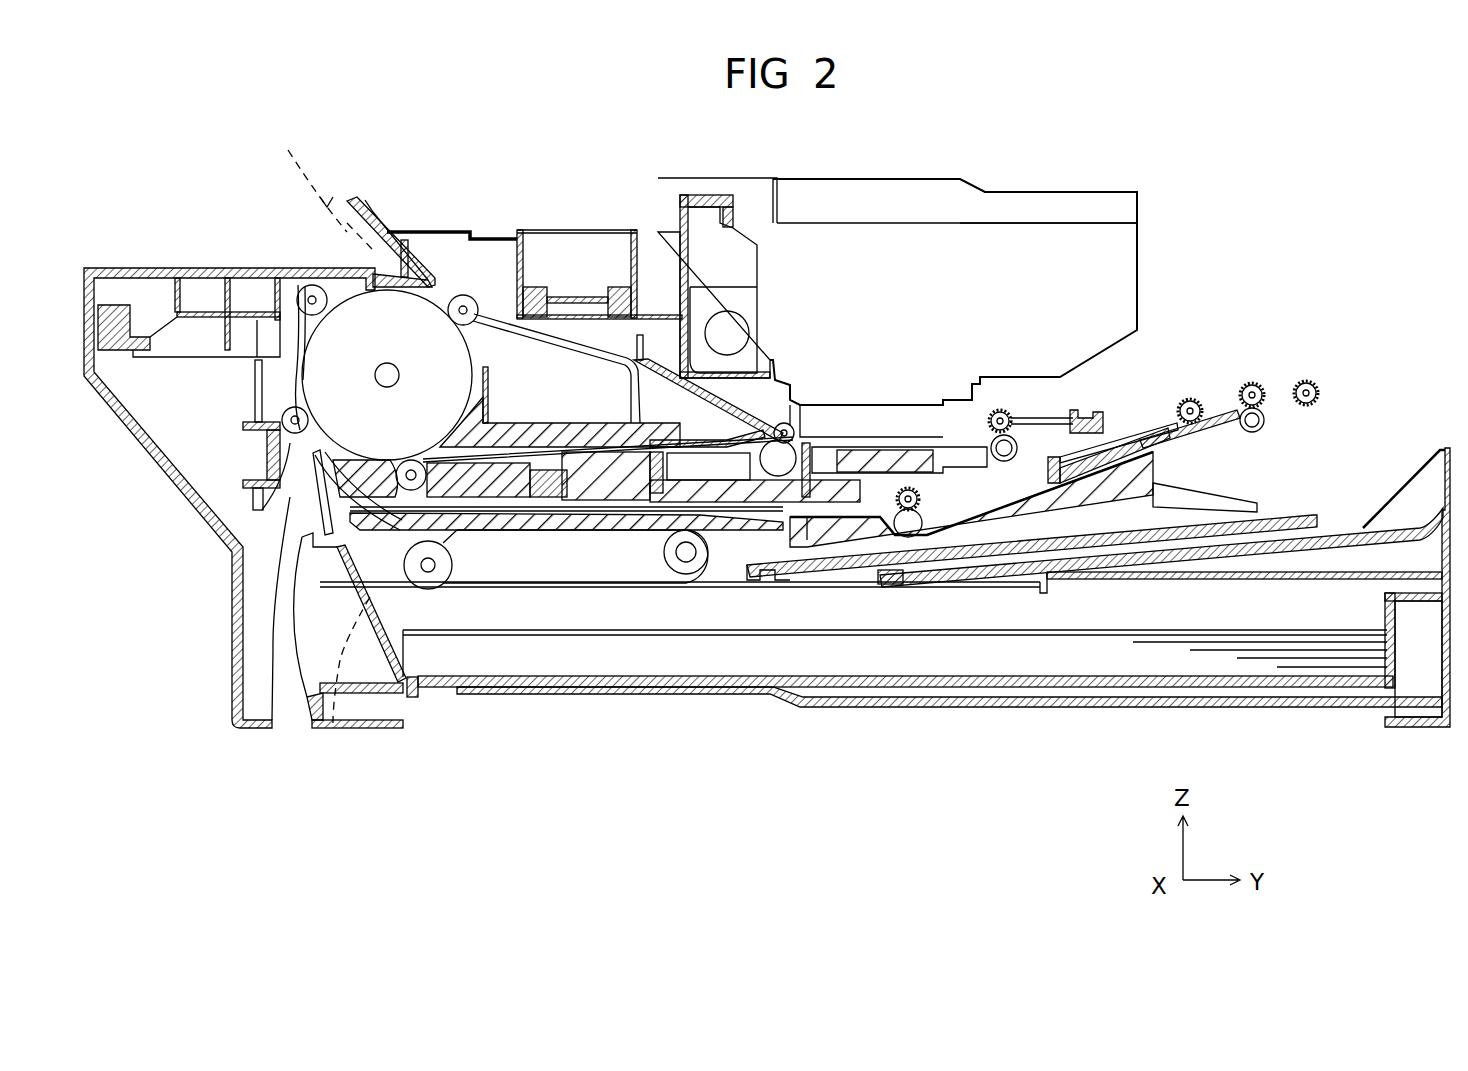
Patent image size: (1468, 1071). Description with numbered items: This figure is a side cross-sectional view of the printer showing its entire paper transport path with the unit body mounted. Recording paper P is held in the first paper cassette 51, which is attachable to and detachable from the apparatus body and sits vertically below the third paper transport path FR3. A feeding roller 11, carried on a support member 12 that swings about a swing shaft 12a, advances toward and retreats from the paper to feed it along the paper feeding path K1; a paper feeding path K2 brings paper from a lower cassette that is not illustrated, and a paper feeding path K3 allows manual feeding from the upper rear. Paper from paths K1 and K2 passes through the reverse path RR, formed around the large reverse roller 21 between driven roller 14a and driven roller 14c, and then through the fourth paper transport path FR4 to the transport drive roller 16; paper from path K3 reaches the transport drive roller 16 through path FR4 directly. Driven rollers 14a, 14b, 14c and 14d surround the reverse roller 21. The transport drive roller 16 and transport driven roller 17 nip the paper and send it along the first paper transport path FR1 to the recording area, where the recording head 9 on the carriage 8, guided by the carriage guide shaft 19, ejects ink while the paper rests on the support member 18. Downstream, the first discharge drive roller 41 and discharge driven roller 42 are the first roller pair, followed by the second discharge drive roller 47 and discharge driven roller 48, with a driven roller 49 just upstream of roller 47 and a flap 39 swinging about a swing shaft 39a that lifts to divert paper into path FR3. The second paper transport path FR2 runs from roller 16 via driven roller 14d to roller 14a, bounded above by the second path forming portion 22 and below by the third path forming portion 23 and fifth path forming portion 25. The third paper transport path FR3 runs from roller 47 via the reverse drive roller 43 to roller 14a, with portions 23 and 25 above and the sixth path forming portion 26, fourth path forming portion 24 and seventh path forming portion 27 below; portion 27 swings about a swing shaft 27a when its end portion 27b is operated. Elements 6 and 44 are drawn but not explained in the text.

The sheet discharge guide 6 is at (1350, 520).
The carriage 8 is at (913, 222).
The recording head 9 is at (912, 392).
The feeding roller 11 is at (430, 590).
The support member 12 is at (547, 570).
The swing shaft 12a is at (680, 573).
The driven roller 14a is at (293, 447).
The driven roller 14b is at (293, 300).
The driven roller 14c is at (478, 300).
The driven roller 14d is at (477, 540).
The transport drive roller 16 is at (778, 423).
The transport driven roller 17 is at (790, 410).
The support member 18 is at (845, 437).
The carriage guide shaft 19 is at (713, 320).
The reverse roller 21 is at (430, 290).
The second path forming portion 22 is at (530, 423).
The third path forming portion 23 is at (513, 540).
The fourth path forming portion 24 is at (457, 540).
The fifth path forming portion 25 is at (642, 505).
The sixth path forming portion 26 is at (388, 697).
The seventh path forming portion 27 is at (987, 540).
The swing shaft 27a is at (793, 545).
The end portion 27b is at (1262, 500).
The flap 39 is at (1137, 440).
The swing shaft 39a is at (1055, 420).
The first discharge drive roller 41 is at (1032, 440).
The discharge driven roller 42 is at (1003, 400).
The reverse drive roller 43 is at (900, 525).
The roller 44 is at (877, 505).
The second discharge drive roller 47 is at (1295, 400).
The discharge driven roller 48 is at (1245, 383).
The driven roller 49 is at (1195, 397).
The first paper cassette 51 is at (1303, 690).
The recording paper P is at (1110, 665).
The paper feeding path K1 is at (322, 748).
The paper feeding path K2 is at (255, 648).
The paper feeding path K3 is at (345, 182).
The reverse path RR is at (257, 265).
The first paper transport path FR1 is at (952, 387).
The second paper transport path FR2 is at (565, 295).
The third paper transport path FR3 is at (617, 540).
The fourth paper transport path FR4 is at (618, 300).